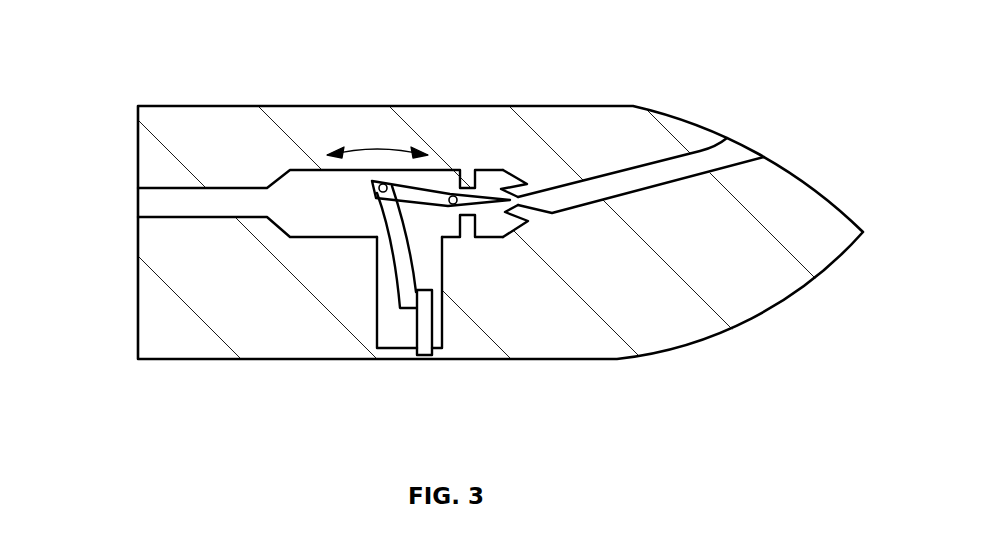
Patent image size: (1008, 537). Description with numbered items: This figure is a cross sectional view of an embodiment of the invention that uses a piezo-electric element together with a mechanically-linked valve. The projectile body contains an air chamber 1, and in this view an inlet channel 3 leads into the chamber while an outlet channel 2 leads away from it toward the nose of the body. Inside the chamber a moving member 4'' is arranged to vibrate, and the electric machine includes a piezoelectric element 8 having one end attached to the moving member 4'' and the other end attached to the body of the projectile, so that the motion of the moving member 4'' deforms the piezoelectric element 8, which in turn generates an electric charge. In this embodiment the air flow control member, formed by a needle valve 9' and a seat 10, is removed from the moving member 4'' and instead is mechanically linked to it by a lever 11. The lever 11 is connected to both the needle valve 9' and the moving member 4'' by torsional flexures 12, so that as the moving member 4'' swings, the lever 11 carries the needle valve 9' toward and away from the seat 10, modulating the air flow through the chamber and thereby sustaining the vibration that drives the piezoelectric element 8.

The air chamber 1 is at (445, 178).
The outlet channel 2 is at (748, 147).
The inlet channel 3 is at (150, 203).
The moving member 4'' is at (390, 310).
The piezoelectric element 8 is at (425, 333).
The needle valve 9' is at (580, 317).
The seat 10 is at (527, 187).
The lever 11 is at (448, 237).
The torsional flexures 12 is at (455, 197).